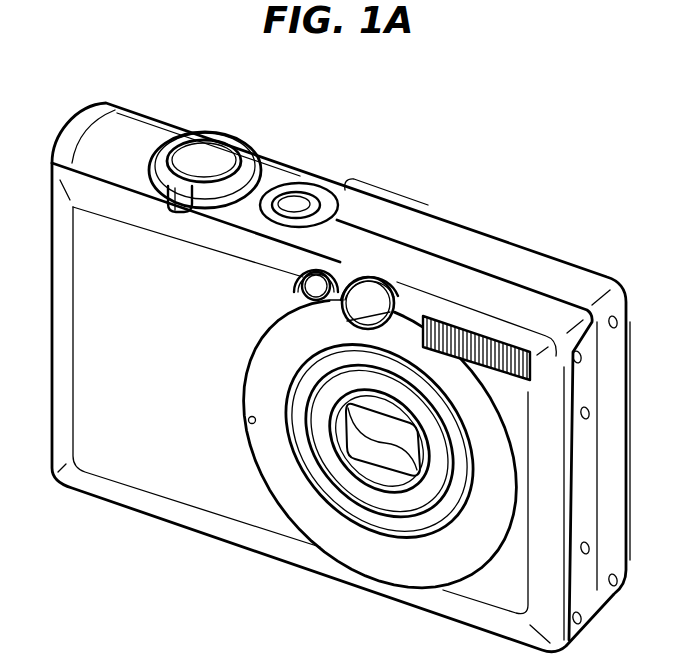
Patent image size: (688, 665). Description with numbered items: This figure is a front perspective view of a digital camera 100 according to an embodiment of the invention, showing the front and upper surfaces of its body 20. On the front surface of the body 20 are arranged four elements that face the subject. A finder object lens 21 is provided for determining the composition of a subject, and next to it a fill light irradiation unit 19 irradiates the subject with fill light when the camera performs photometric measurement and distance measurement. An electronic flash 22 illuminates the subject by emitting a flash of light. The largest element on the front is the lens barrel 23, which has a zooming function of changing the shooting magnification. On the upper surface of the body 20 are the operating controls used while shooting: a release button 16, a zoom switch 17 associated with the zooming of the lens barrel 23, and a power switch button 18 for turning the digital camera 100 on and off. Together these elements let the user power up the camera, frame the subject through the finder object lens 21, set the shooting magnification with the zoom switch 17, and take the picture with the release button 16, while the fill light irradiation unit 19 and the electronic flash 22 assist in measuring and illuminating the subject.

The digital camera 100 is at (138, 98).
The release button 16 is at (213, 150).
The zoom switch 17 is at (256, 150).
The power switch button 18 is at (292, 203).
The fill light irradiation unit 19 is at (314, 284).
The body 20 is at (180, 477).
The finder object lens 21 is at (367, 303).
The electronic flash 22 is at (480, 333).
The lens barrel 23 is at (380, 497).